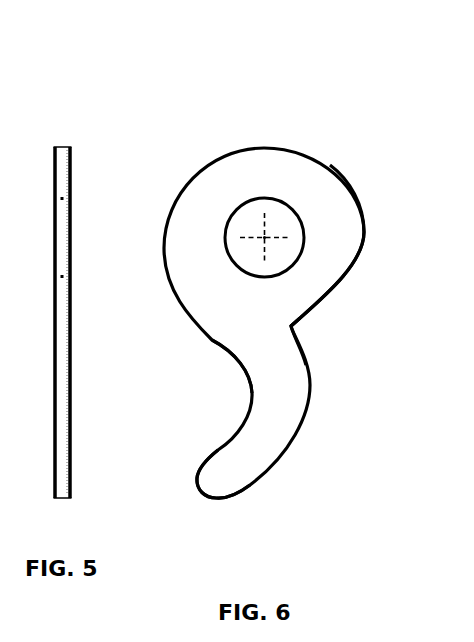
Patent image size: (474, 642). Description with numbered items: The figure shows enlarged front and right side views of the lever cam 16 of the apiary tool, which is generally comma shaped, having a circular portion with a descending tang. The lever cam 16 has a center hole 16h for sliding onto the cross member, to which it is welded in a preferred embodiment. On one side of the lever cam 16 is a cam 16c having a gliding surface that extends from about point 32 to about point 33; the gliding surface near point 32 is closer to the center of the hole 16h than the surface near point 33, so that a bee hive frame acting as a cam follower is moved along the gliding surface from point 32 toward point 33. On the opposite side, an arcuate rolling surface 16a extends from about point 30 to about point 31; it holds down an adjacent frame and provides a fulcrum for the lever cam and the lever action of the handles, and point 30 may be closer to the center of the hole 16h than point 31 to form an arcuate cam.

In FIG. 5, the lever cam 16 is at (62, 146).
In FIG. 6, the lever cam 16 is at (229, 155).
In FIG. 5, the center hole 16h is at (72, 237).
In FIG. 6, the center hole 16h is at (302, 211).
In FIG. 6, the arcuate rolling surface 16a is at (353, 277).
In FIG. 6, the cam 16c is at (194, 477).
In FIG. 6, the point 30 is at (296, 329).
In FIG. 6, the point 31 is at (364, 216).
In FIG. 6, the point 32 is at (211, 340).
In FIG. 6, the point 33 is at (209, 499).